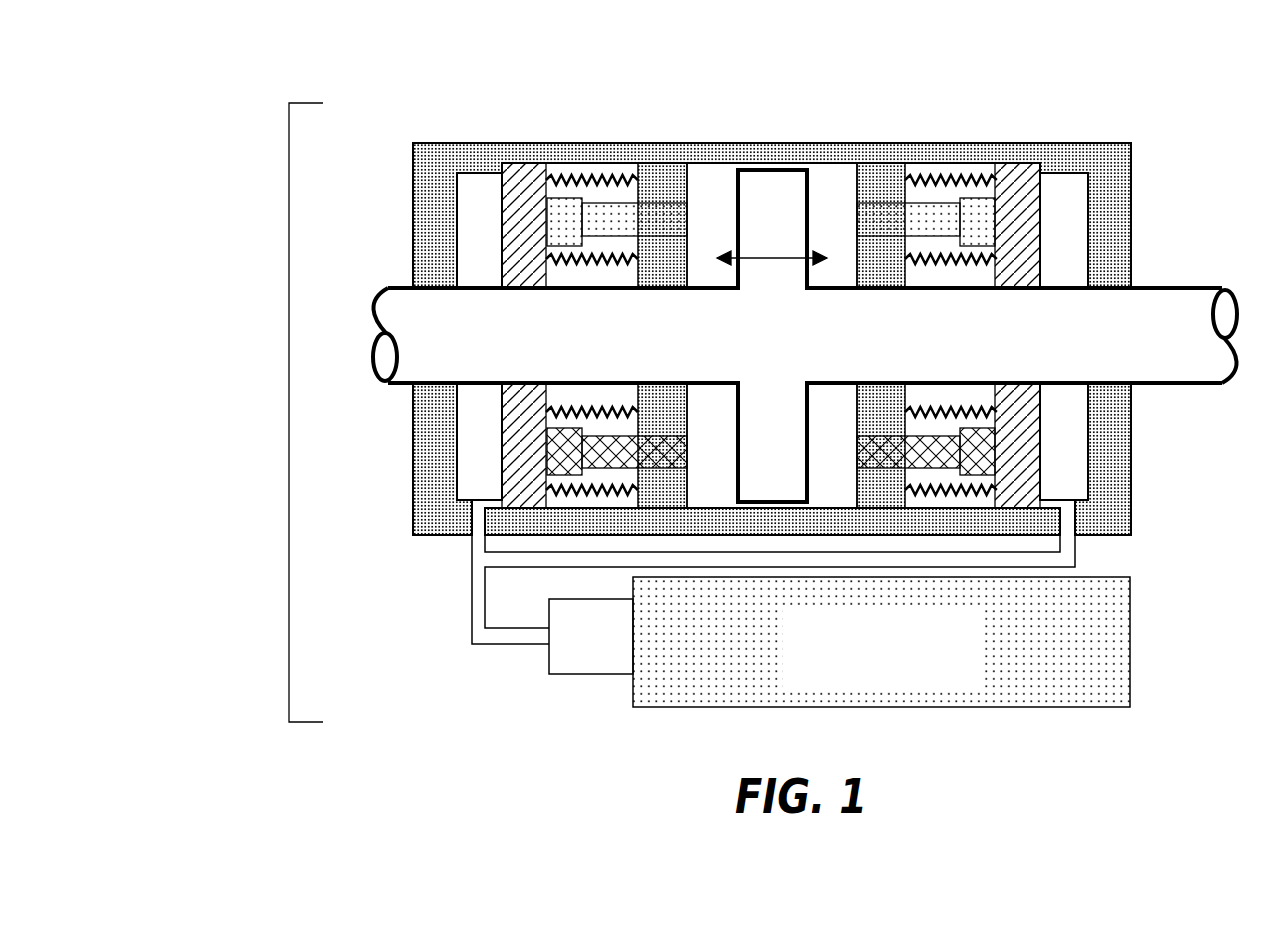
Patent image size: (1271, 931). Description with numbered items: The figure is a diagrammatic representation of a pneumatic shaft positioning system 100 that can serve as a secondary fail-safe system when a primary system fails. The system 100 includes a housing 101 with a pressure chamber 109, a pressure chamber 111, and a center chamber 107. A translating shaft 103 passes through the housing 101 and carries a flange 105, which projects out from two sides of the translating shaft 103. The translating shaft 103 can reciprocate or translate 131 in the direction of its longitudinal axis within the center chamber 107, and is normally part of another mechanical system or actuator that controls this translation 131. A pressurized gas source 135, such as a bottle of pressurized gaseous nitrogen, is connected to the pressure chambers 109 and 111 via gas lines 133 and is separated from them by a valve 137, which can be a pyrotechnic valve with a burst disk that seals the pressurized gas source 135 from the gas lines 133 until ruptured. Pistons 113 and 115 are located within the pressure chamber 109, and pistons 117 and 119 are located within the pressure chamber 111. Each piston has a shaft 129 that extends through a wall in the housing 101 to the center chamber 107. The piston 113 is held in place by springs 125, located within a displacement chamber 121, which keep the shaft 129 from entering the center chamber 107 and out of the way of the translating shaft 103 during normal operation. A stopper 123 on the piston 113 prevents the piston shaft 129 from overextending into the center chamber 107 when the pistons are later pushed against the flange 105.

The system 100 is at (257, 412).
The housing 101 is at (1090, 152).
The translating shaft 103 is at (925, 347).
The flange 105 is at (773, 172).
The center chamber 107 is at (820, 185).
The pressure chamber 109 is at (455, 225).
The pressure chamber 111 is at (1070, 190).
The piston 113 is at (455, 150).
The piston 115 is at (505, 458).
The piston 117 is at (1098, 238).
The piston 119 is at (1040, 475).
The displacement chamber 121 is at (517, 185).
The stopper 123 is at (560, 197).
The springs 125 is at (603, 178).
The shaft 129 is at (672, 175).
The translation 131 is at (790, 258).
The gas lines 133 is at (483, 637).
The pressurized gas source 135 is at (945, 672).
The valve 137 is at (572, 660).